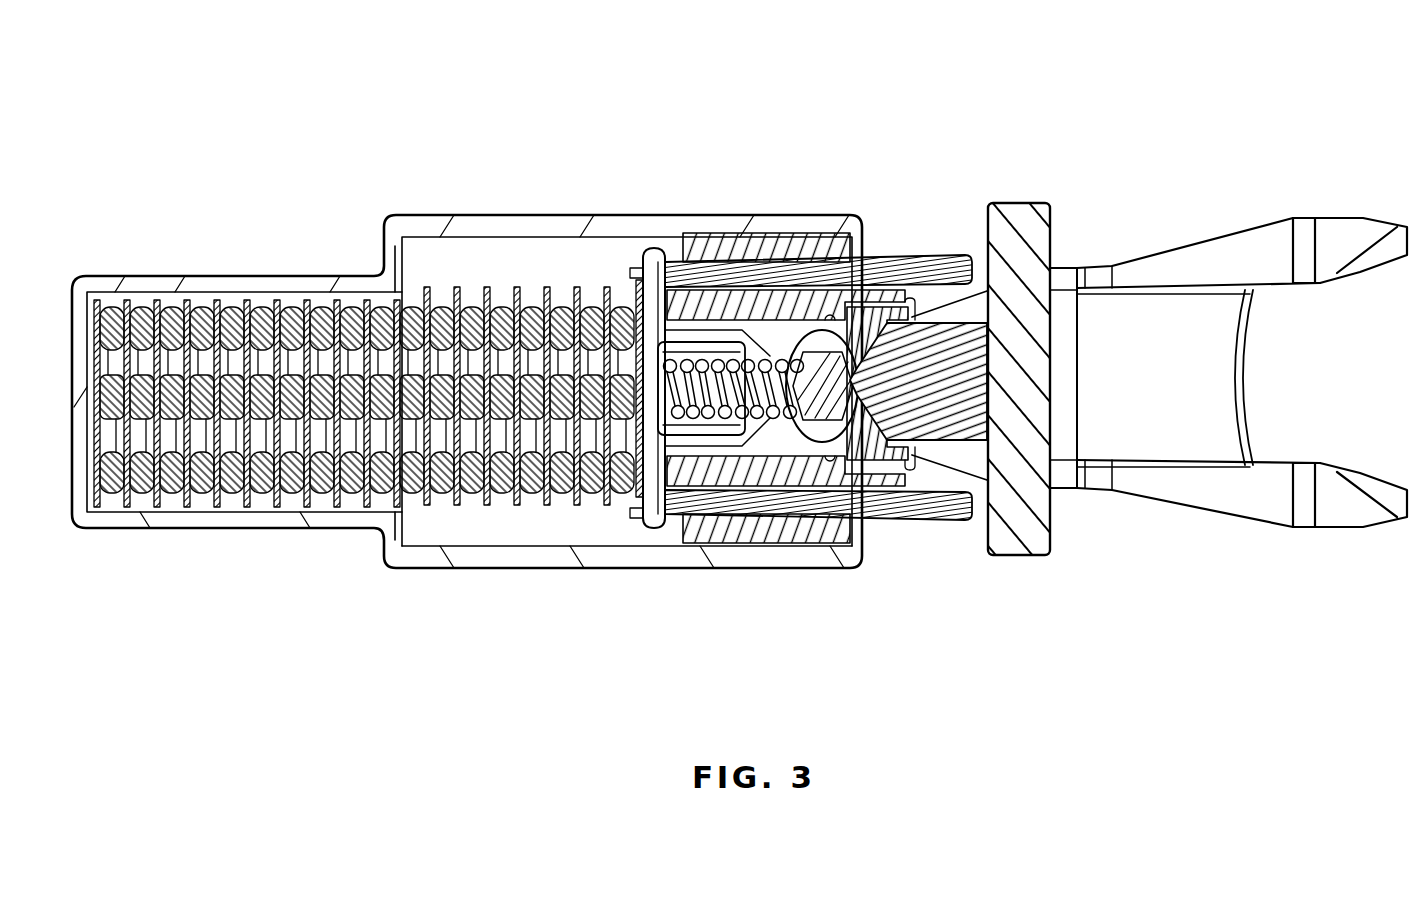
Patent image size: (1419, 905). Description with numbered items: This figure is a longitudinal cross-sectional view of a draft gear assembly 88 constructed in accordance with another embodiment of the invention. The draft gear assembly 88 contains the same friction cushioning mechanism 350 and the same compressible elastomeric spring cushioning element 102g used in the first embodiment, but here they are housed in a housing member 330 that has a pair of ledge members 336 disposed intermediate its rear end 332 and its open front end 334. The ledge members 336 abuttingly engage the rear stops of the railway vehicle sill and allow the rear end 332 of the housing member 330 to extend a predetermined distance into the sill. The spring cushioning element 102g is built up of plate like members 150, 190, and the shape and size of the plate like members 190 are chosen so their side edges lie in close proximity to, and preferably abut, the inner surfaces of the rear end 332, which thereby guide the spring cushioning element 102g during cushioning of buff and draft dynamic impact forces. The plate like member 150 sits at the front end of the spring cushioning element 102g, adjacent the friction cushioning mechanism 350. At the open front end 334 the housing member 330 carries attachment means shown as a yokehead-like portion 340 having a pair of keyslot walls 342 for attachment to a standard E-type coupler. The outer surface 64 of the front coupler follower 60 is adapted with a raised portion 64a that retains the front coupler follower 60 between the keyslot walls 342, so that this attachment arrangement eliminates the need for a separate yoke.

The draft gear assembly 88 is at (800, 116).
The housing member 330 is at (567, 202).
The rear end 332 is at (143, 530).
The open front end 334 is at (813, 572).
The ledge members 336 is at (376, 247).
The compressible elastomeric spring cushioning element 102g is at (475, 272).
The plate like members 190 is at (508, 500).
The plate like member 150 is at (637, 497).
The friction cushioning mechanism 350 is at (915, 203).
The front coupler follower 60 is at (1075, 334).
The outer surface 64 is at (1050, 225).
The raised portion 64a is at (1079, 364).
The yokehead-like portion 340 is at (1223, 232).
The keyslot walls 342 is at (1337, 467).